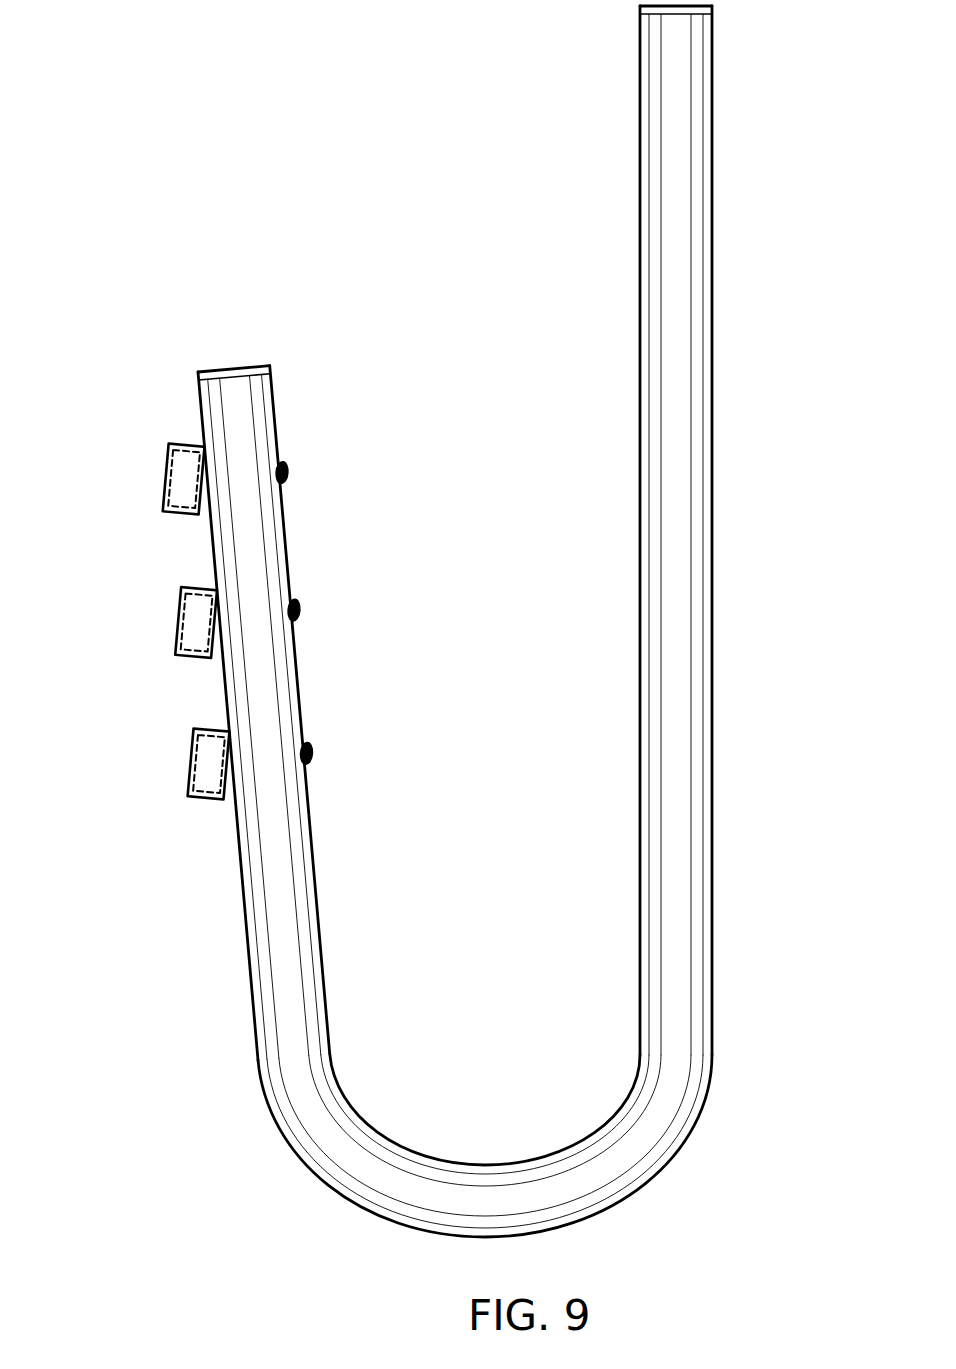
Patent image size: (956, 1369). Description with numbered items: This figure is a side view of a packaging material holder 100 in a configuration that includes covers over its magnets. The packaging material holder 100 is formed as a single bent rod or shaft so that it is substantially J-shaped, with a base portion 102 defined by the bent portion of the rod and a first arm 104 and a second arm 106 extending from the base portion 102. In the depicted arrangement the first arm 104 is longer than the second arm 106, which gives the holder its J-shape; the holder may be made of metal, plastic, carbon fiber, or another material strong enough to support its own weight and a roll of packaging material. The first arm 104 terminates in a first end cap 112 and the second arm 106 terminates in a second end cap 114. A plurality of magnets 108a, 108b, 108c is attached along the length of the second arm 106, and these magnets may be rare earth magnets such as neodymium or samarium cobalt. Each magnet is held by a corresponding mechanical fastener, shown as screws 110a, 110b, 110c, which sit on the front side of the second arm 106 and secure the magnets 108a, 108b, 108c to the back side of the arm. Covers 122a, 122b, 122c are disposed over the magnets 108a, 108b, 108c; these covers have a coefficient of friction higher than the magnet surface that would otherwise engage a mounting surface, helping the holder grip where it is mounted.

The packaging material holder 100 is at (178, 107).
The base portion 102 is at (291, 1148).
The first arm 104 is at (713, 262).
The second arm 106 is at (251, 1000).
The magnet 108a is at (169, 455).
The magnet 108b is at (182, 596).
The magnet 108c is at (194, 737).
The screw 110a is at (286, 470).
The screw 110b is at (298, 608).
The screw 110c is at (311, 750).
The first end cap 112 is at (713, 10).
The second end cap 114 is at (197, 378).
The cover 122a is at (176, 503).
The cover 122b is at (188, 642).
The cover 122c is at (201, 784).